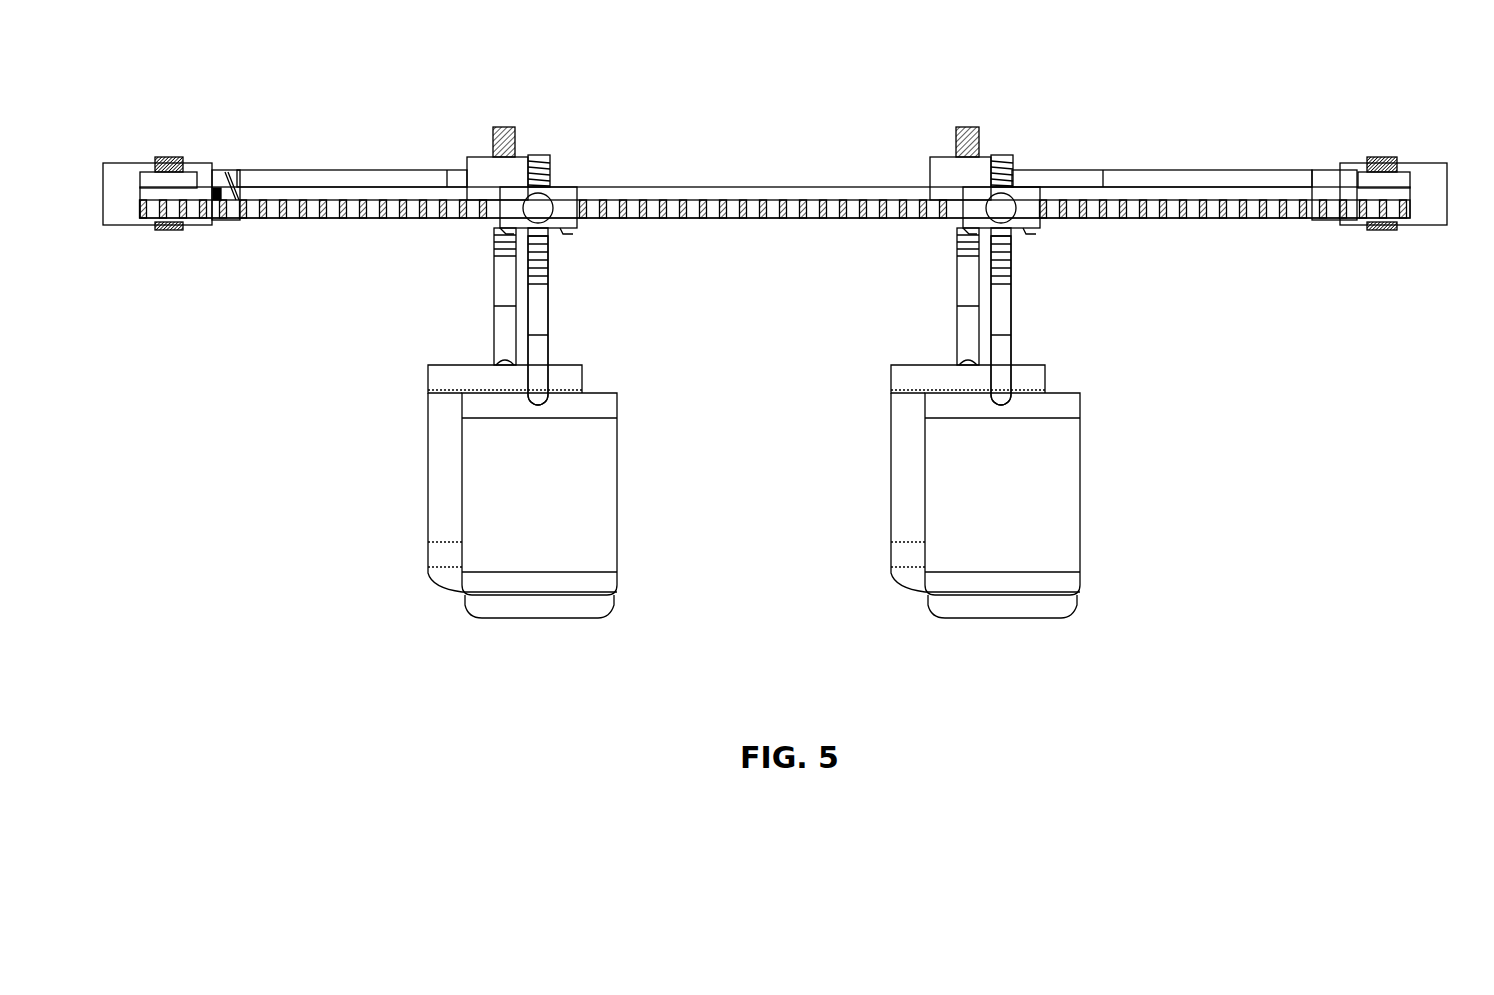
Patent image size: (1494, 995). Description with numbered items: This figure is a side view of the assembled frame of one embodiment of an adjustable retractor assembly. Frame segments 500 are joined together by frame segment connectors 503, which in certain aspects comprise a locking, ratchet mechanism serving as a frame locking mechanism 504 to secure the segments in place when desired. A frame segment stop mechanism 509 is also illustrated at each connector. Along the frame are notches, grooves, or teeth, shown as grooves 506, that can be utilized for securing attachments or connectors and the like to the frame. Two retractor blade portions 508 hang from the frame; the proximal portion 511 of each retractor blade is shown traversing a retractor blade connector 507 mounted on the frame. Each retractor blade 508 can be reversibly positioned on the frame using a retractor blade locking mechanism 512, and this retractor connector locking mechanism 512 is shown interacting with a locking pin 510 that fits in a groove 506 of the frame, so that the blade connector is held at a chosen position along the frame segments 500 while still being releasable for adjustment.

The frame segment 500 is at (330, 175).
The frame segment connector 503 is at (121, 198).
The frame locking mechanism 504 is at (226, 177).
The groove 506 is at (356, 232).
The retractor blade connector 507 is at (475, 172).
The retractor blade 508 is at (478, 535).
The frame segment stop mechanism 509 is at (171, 155).
The locking pin 510 is at (504, 128).
The proximal portion of the retractor blade 511 is at (545, 160).
The retractor blade locking mechanism 512 is at (540, 215).